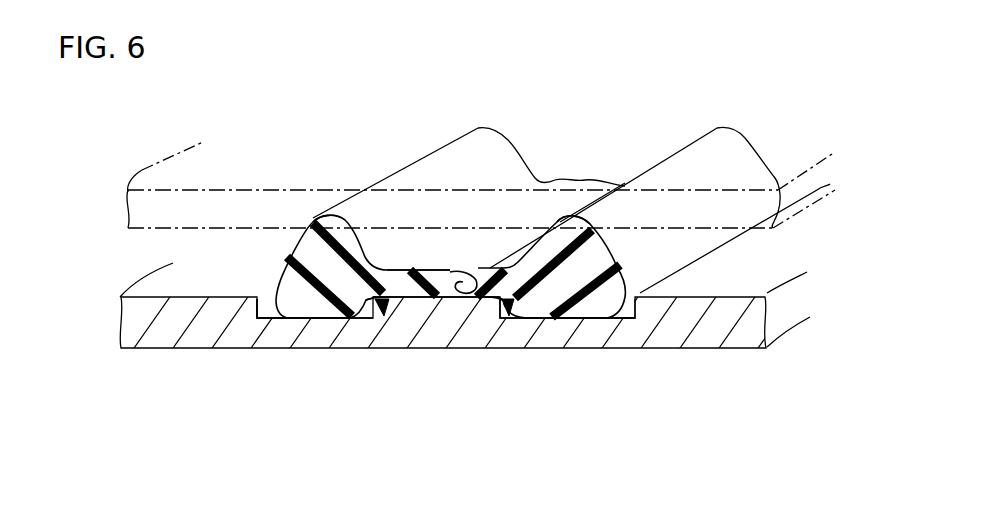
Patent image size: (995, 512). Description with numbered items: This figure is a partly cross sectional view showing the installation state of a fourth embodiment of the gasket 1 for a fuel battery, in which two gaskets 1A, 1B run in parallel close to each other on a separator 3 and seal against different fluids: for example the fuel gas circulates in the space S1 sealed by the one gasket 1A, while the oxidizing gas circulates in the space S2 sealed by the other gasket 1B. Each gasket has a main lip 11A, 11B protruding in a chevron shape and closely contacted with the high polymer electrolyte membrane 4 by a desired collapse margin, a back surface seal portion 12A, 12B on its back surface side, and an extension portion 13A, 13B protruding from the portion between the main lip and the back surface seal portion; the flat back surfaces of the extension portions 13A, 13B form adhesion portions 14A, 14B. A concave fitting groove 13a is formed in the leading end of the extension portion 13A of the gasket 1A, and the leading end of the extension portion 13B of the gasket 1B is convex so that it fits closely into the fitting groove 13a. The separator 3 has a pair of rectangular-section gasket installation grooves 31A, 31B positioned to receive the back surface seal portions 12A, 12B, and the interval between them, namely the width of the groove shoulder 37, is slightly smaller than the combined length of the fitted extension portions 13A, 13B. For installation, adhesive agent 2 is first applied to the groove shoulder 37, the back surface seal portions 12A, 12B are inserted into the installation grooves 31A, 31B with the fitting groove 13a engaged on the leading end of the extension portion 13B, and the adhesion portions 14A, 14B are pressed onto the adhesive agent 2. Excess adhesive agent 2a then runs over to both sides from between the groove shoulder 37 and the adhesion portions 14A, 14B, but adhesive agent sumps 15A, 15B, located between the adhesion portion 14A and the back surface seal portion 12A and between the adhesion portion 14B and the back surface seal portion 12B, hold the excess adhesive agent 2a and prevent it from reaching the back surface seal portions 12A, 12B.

The gasket 1 is at (553, 187).
The gasket 1A is at (380, 178).
The gasket 1B is at (645, 170).
The adhesive agent 2 is at (450, 299).
The excess adhesive agent 2a is at (372, 299).
The separator 3 is at (692, 347).
The high polymer electrolyte membrane 4 is at (250, 165).
The main lip 11A is at (327, 217).
The main lip 11B is at (574, 222).
The back surface seal portion 12A is at (320, 322).
The back surface seal portion 12B is at (572, 318).
The extension portion 13A is at (424, 268).
The extension portion 13B is at (478, 277).
The fitting groove 13a is at (460, 277).
The adhesion portion 14A is at (390, 300).
The adhesion portion 14B is at (487, 300).
The adhesive agent sump 15A is at (372, 305).
The adhesive agent sump 15B is at (518, 303).
The gasket installation groove 31A is at (271, 307).
The gasket installation groove 31B is at (626, 294).
The groove shoulder 37 is at (440, 267).
The space S1 is at (198, 255).
The space S2 is at (727, 260).